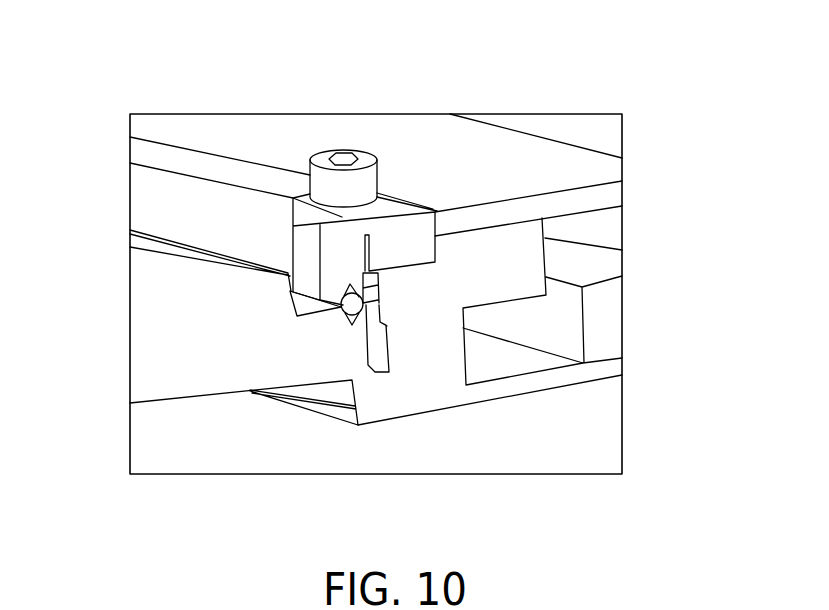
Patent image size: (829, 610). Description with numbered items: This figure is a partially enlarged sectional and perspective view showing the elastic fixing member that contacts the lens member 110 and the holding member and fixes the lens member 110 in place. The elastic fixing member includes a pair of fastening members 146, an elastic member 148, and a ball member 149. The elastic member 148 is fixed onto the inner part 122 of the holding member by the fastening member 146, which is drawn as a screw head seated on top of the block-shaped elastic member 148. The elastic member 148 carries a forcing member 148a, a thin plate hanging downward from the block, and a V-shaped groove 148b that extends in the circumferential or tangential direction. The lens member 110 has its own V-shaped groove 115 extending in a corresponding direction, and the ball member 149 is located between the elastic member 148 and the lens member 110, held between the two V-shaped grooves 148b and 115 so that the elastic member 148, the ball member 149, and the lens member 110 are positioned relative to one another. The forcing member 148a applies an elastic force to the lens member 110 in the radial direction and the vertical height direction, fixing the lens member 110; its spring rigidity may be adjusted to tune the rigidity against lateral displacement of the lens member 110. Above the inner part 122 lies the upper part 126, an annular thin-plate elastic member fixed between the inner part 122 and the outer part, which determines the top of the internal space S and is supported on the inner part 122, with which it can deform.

The lens member 110 is at (297, 362).
The V-shaped groove 115 is at (347, 319).
The inner part 122 is at (410, 347).
The upper part 126 is at (600, 196).
The fastening member 146 is at (342, 179).
The elastic member 148 is at (399, 229).
The forcing member 148a is at (366, 231).
The V-shaped groove 148b is at (349, 287).
The ball member 149 is at (349, 304).
The space S is at (588, 228).